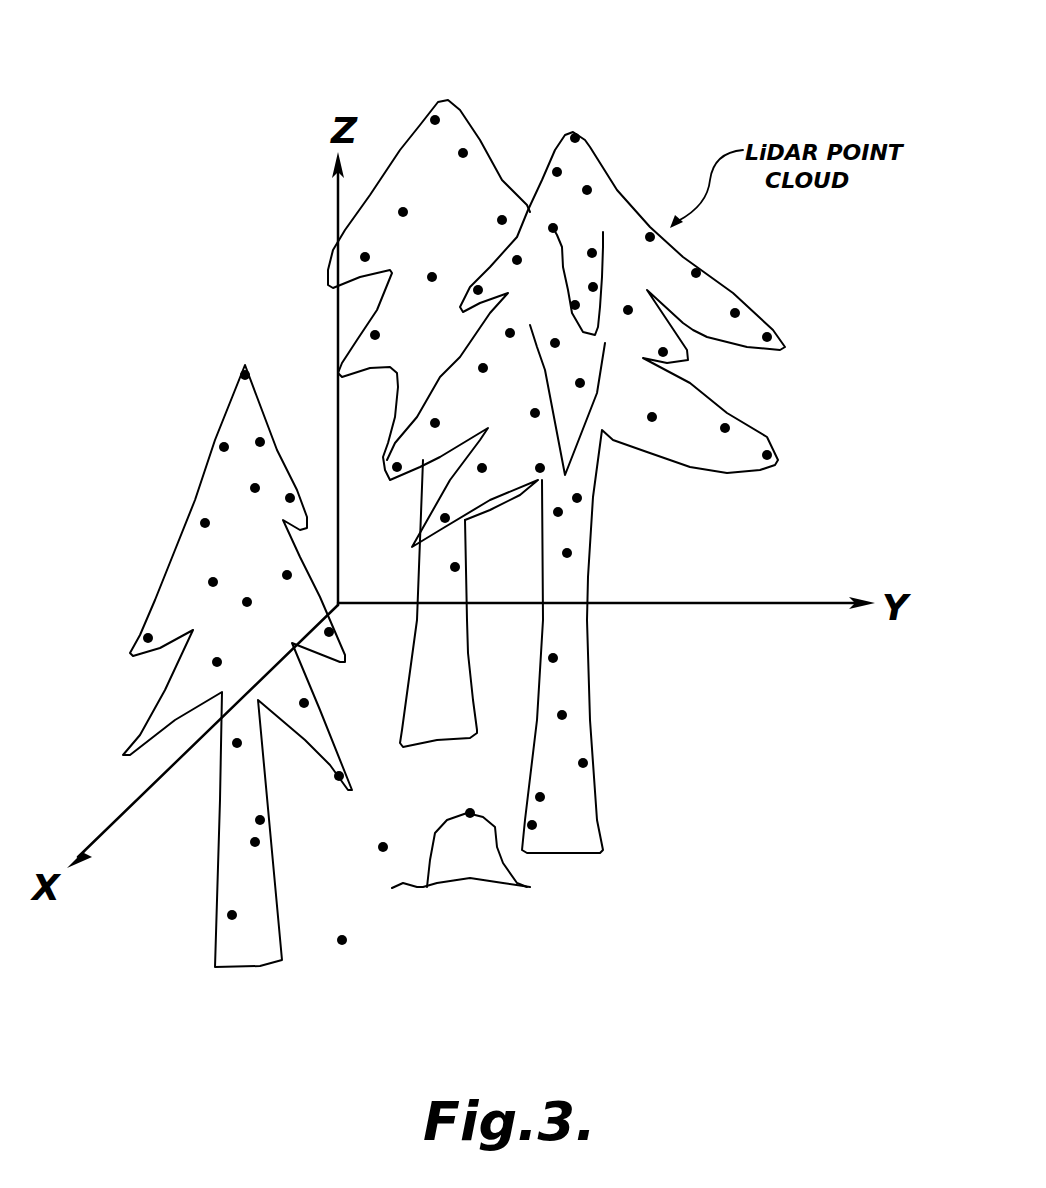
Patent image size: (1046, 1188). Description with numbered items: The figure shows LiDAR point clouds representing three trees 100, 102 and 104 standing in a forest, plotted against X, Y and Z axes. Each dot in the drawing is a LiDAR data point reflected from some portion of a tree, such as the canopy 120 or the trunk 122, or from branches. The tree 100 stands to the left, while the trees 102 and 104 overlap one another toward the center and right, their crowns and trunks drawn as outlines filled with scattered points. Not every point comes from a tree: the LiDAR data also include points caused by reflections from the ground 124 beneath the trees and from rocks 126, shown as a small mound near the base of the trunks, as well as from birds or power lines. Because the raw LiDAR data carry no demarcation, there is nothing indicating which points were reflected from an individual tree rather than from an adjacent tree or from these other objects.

The tree 100 is at (216, 418).
The tree 102 is at (466, 103).
The tree 104 is at (622, 163).
The canopy 120 is at (735, 308).
The trunk 122 is at (574, 558).
The ground 124 is at (383, 845).
The rocks 126 is at (471, 810).